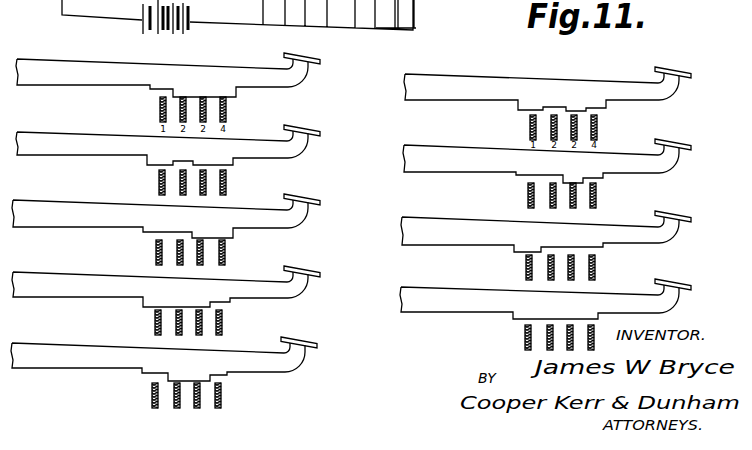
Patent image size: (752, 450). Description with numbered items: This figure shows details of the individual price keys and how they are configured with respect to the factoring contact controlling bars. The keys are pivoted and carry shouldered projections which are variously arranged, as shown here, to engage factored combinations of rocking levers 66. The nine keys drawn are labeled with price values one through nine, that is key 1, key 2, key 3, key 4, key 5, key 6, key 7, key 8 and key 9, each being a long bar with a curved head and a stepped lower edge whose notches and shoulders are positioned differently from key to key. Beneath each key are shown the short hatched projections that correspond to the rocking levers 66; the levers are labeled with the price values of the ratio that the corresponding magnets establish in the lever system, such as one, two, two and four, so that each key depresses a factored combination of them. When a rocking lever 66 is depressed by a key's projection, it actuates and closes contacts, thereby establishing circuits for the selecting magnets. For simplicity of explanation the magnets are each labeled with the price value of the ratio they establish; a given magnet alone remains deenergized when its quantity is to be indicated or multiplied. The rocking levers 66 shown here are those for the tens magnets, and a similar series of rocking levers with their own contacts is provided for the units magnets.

The selecting bar 1 is at (175, 72).
The selecting bar 2 is at (175, 156).
The selecting bar 3 is at (173, 226).
The selecting bar 4 is at (173, 297).
The selecting bar 5 is at (173, 370).
The selecting bar 6 is at (555, 100).
The selecting bar 7 is at (555, 170).
The selecting bar 8 is at (554, 242).
The selecting bar 9 is at (553, 312).
The rocking levers 66 is at (229, 113).